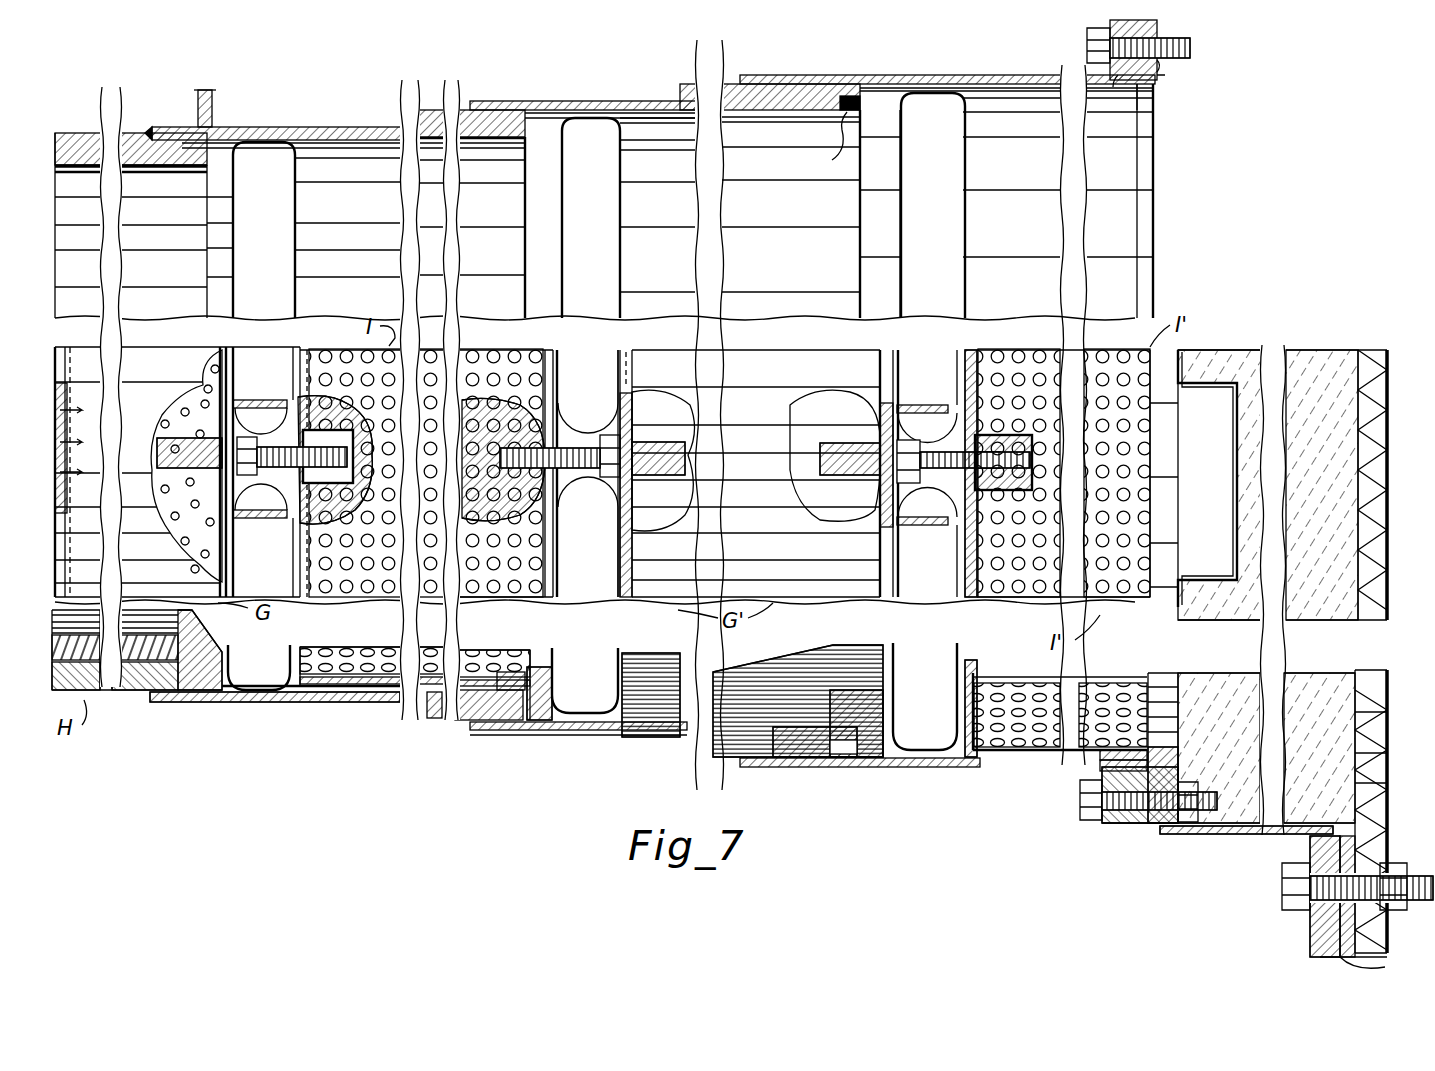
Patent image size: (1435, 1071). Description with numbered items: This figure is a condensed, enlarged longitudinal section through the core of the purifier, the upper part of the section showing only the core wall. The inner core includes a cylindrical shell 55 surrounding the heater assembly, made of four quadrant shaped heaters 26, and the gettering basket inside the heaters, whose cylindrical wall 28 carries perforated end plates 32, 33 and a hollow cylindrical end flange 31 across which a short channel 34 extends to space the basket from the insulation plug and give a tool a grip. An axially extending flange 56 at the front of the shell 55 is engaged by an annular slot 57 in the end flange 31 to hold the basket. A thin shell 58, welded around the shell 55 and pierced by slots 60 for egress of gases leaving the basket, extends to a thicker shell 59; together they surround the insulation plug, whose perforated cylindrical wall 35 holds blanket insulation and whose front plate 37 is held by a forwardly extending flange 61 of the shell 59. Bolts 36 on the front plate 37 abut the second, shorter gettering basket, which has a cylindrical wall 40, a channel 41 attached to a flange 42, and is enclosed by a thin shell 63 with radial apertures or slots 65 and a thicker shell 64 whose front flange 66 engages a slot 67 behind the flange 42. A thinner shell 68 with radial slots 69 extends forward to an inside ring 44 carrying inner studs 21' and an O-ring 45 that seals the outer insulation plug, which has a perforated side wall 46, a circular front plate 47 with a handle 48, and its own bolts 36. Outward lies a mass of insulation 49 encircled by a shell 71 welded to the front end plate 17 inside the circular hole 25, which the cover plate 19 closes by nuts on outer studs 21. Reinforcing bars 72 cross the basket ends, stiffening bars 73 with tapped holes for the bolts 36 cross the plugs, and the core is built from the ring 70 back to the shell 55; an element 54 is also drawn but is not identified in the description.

The front end plate 17 is at (1380, 838).
The cover plate 19 is at (1355, 668).
The outer studs 21 is at (1327, 886).
The inner studs 21' is at (1119, 421).
The circular hole 25 is at (1315, 837).
The quadrant shaped heaters 26 is at (143, 693).
The cylindrical wall 28 is at (170, 466).
The end flange 31 is at (195, 643).
The perforated end plate 32 is at (182, 378).
The perforated end plate 33 is at (96, 342).
The short channel 34 is at (262, 380).
The perforated cylindrical wall 35 is at (338, 340).
The bolts 36 is at (253, 466).
The front plate 37 is at (519, 655).
The cylindrical wall 40 is at (762, 473).
The channel 41 is at (943, 404).
The flange 42 is at (875, 710).
The inside ring 44 is at (1128, 77).
The O-ring 45 is at (1185, 58).
The perforated side wall 46 is at (1019, 357).
The circular front plate 47 is at (1168, 517).
The handle 48 is at (1222, 499).
The mass of insulation 49 is at (1305, 345).
The flange 54 is at (1383, 966).
The cylindrical shell 55 is at (105, 132).
The axially extending flange 56 is at (221, 168).
The annular slot 57 is at (215, 695).
The thin shell 58 is at (370, 127).
The thicker shell 59 is at (458, 115).
The slots 60 is at (238, 237).
The forwardly extending flange 61 is at (539, 153).
The thin shell 63 is at (597, 116).
The thicker shell 64 is at (766, 418).
The apertures or slots 65 is at (567, 186).
The front flange 66 is at (812, 793).
The slot 67 is at (858, 760).
The thinner shell 68 is at (889, 80).
The radial slots 69 is at (901, 205).
The ring 70 is at (1108, 821).
The shell 71 is at (1243, 834).
The reinforcing bars 72 is at (163, 438).
The stiffening bars 73 is at (597, 520).